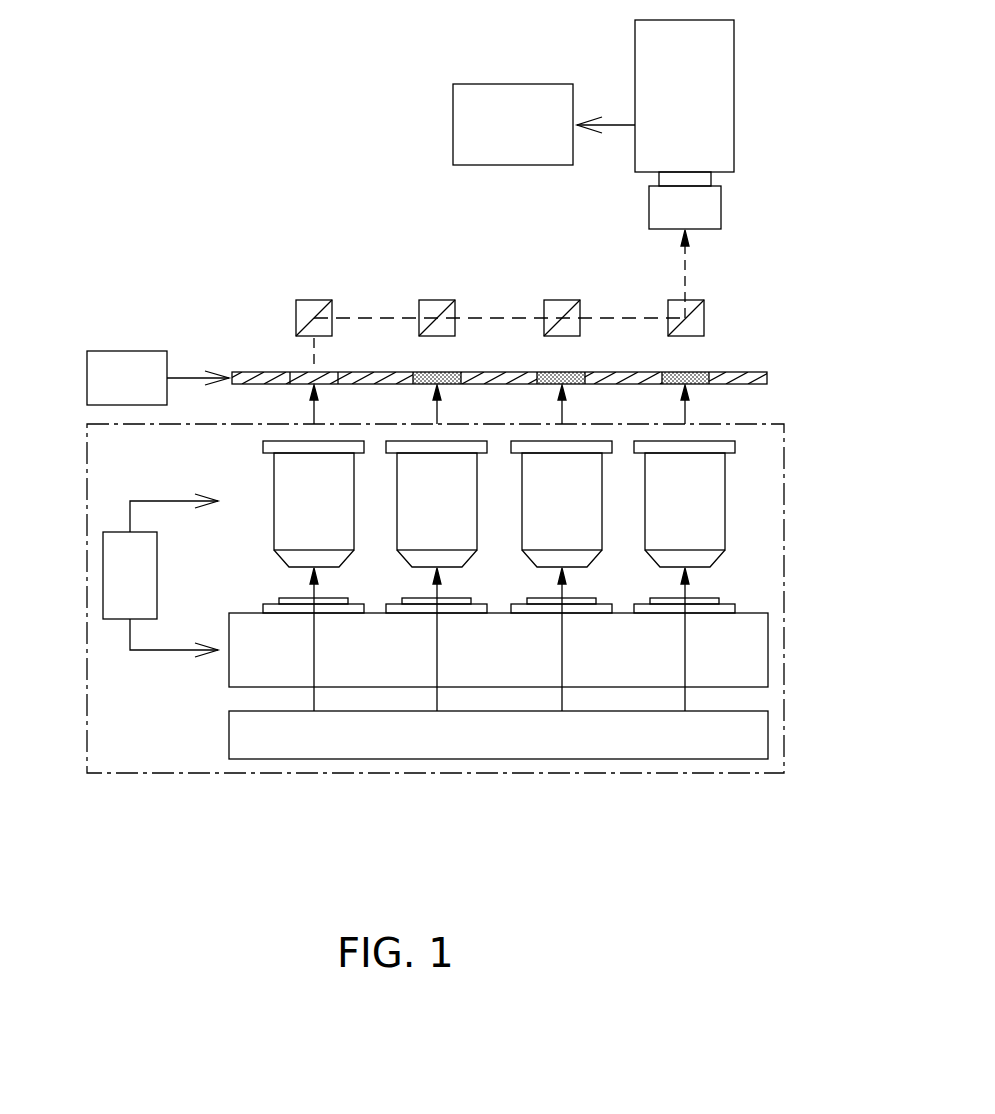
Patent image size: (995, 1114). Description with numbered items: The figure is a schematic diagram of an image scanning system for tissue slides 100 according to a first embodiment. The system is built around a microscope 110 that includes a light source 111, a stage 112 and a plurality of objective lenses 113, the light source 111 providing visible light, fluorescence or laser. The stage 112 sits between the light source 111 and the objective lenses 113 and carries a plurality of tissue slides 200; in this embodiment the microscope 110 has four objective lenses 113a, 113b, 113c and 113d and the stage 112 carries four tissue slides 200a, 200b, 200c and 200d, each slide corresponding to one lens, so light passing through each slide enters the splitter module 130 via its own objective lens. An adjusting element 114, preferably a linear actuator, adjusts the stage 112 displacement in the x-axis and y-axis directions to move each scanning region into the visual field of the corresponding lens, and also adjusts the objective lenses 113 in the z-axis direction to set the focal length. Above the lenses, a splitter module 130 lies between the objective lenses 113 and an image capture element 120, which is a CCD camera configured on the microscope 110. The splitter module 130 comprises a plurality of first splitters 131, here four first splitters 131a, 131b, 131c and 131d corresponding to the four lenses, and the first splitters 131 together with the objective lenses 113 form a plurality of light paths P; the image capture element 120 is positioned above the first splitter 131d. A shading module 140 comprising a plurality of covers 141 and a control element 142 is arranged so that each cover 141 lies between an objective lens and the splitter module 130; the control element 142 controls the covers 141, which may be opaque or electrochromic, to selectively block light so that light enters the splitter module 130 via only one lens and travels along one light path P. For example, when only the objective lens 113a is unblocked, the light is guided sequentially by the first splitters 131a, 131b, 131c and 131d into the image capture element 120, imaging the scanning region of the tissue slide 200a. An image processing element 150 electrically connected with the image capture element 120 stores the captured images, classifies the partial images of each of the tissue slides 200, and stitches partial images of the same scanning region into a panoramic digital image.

The image scanning system for tissue slides 100 is at (145, 108).
The microscope 110 is at (172, 773).
The light source 111 is at (750, 740).
The stage 112 is at (750, 658).
The objective lenses 113 is at (748, 512).
The objective lens 113a is at (303, 528).
The objective lens 113b is at (426, 528).
The objective lens 113c is at (551, 528).
The objective lens 113d is at (674, 528).
The adjusting element 114 is at (118, 577).
The image capture element 120 is at (715, 86).
The splitter module 130 is at (270, 268).
The first splitters 131 is at (558, 297).
The first splitter 131a is at (312, 298).
The first splitter 131b is at (435, 298).
The first splitter 131c is at (558, 298).
The first splitter 131d is at (694, 298).
The shading module 140 is at (103, 316).
The covers 141 is at (695, 372).
The control element 142 is at (140, 360).
The image processing element 150 is at (481, 95).
The tissue slides 200 is at (761, 605).
The tissue slide 200a is at (333, 610).
The tissue slide 200b is at (456, 610).
The tissue slide 200c is at (581, 610).
The tissue slide 200d is at (704, 610).
The light paths P is at (715, 410).